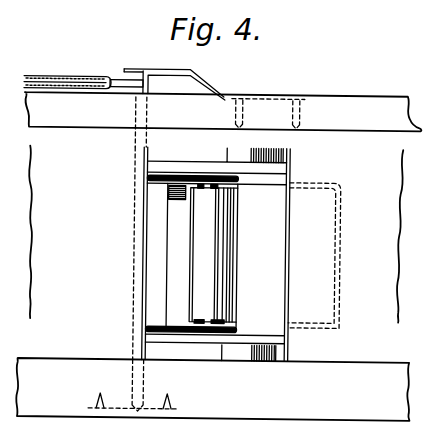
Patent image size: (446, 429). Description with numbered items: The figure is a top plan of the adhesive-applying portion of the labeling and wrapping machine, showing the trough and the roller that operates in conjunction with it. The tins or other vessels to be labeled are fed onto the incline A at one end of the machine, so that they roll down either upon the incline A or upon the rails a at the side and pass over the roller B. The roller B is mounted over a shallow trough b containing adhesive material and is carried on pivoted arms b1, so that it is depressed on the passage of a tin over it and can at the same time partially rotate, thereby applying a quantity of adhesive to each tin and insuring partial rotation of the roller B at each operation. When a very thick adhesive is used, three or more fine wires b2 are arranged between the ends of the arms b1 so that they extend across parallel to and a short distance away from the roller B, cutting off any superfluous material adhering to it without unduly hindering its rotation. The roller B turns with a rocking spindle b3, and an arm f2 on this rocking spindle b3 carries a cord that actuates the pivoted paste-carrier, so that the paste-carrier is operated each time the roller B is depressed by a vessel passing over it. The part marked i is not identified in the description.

The incline A is at (222, 210).
The rails a is at (197, 352).
The rod i is at (52, 78).
The arm f2 is at (124, 76).
The shallow trough b is at (216, 254).
The pivoted arms b1 is at (247, 337).
The roller B is at (183, 234).
The fine wires b2 is at (250, 207).
The rocking spindle b3 is at (136, 310).